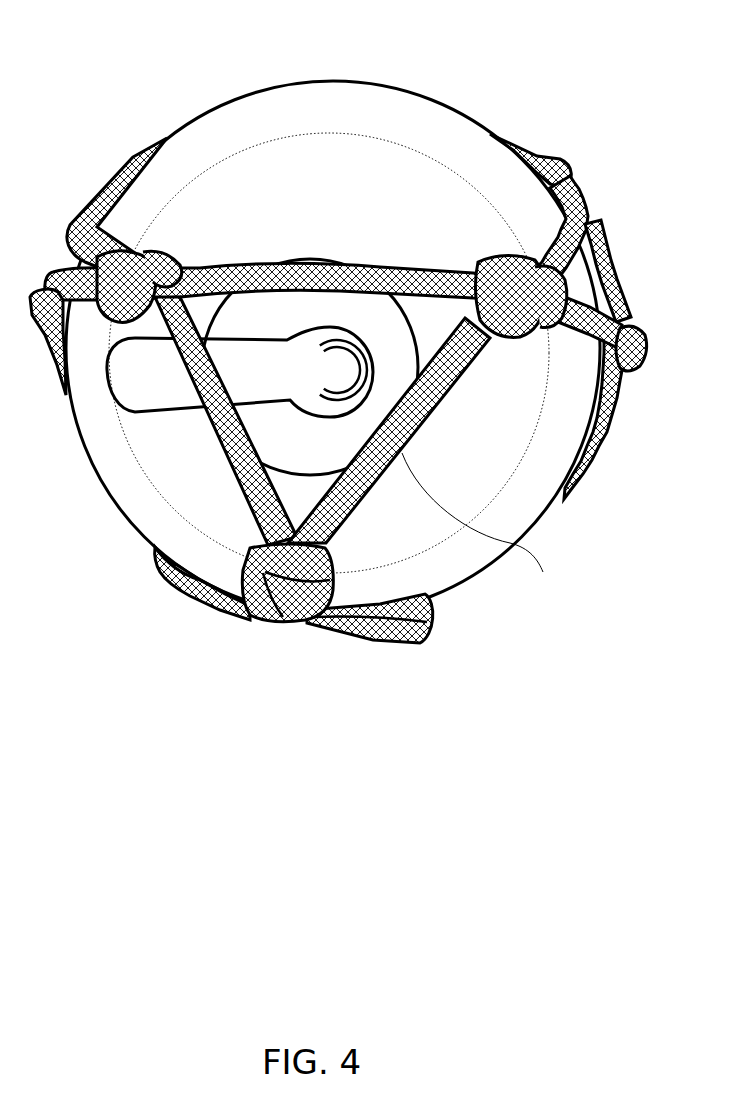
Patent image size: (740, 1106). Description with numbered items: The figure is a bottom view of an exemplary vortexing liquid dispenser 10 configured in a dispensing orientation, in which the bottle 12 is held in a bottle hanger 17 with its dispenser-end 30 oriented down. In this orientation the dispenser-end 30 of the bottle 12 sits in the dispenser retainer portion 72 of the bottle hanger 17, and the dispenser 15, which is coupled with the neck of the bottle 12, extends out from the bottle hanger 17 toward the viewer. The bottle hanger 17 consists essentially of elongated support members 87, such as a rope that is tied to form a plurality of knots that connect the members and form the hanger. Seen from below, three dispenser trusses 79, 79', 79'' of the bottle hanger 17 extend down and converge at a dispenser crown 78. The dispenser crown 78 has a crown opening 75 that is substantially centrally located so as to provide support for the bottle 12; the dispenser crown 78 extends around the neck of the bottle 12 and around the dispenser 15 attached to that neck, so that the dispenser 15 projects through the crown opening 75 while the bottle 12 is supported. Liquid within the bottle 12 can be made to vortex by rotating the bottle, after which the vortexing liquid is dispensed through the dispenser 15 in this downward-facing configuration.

The vortexing liquid dispenser 10 is at (487, 117).
The bottle 12 is at (233, 133).
The dispenser 15 is at (177, 390).
The bottle hanger 17 is at (557, 157).
The dispenser-end 30 is at (377, 163).
The dispenser retainer portion 72 is at (585, 212).
The crown opening 75 is at (427, 320).
The dispenser crown 78 is at (483, 530).
The dispenser truss 79 is at (106, 240).
The dispenser truss 79' is at (584, 304).
The dispenser truss 79'' is at (265, 604).
The elongated support members 87 is at (253, 268).